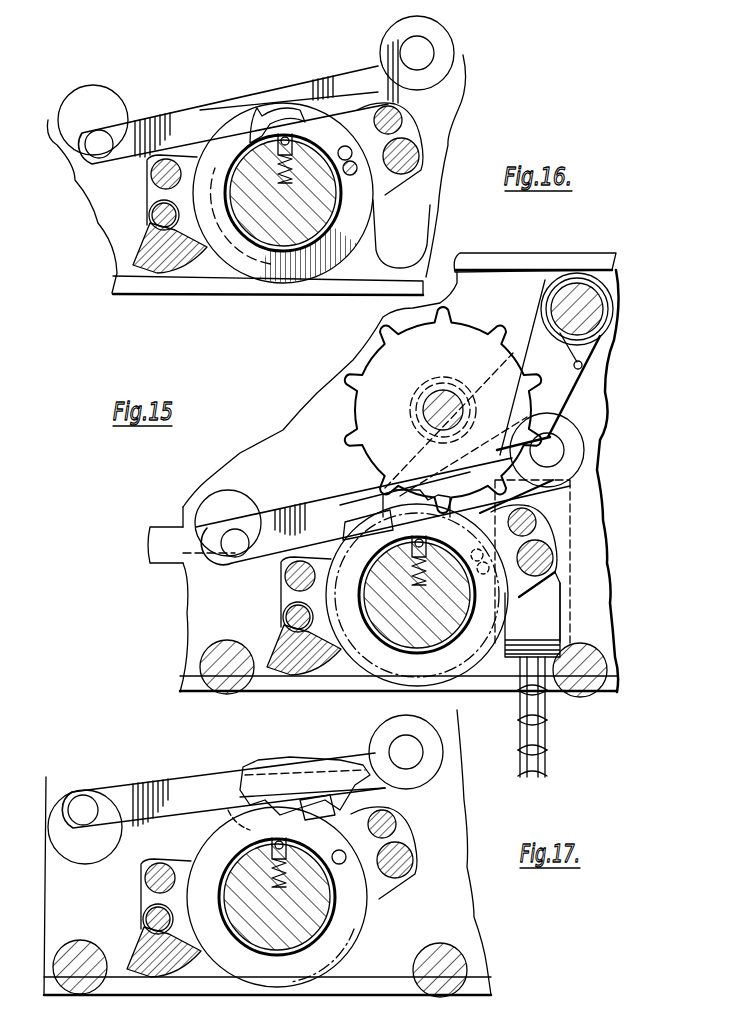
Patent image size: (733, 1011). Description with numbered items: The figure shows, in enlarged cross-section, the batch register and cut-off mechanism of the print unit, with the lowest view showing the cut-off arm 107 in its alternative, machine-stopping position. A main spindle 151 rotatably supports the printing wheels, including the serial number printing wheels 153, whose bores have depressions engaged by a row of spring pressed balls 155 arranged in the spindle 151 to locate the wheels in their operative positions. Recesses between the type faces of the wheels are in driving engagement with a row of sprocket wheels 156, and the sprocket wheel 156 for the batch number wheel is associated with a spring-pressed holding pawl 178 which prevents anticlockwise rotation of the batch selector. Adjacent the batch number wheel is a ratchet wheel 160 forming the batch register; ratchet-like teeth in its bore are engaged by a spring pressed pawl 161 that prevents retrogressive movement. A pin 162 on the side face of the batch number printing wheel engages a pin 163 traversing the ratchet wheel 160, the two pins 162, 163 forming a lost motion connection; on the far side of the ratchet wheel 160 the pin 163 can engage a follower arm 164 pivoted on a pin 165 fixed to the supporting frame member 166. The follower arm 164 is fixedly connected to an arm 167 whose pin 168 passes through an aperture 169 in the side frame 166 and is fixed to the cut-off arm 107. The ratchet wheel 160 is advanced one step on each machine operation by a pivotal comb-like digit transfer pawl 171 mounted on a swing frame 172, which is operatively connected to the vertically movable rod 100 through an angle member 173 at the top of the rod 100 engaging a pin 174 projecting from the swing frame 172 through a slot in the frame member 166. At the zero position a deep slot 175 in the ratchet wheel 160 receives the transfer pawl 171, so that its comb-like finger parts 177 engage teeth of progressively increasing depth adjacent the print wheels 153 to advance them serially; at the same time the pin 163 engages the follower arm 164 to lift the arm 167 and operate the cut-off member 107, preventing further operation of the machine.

In FIG. 15, the rod 100 is at (547, 763).
In FIG. 15, the cut-off arm 107 is at (163, 527).
In FIG. 16, the main spindle 151 is at (260, 223).
In FIG. 15, the serial number printing wheels 153 is at (487, 645).
In FIG. 17, the serial number printing wheels 153 is at (348, 942).
In FIG. 15, the spring pressed balls 155 is at (373, 507).
In FIG. 17, the spring pressed balls 155 is at (320, 810).
In FIG. 15, the sprocket wheels 156 is at (470, 333).
In FIG. 17, the sprocket wheels 156 is at (270, 764).
In FIG. 16, the ratchet wheel 160 is at (327, 127).
In FIG. 17, the ratchet wheel 160 is at (296, 897).
In FIG. 16, the spring pressed pawl 161 is at (280, 134).
In FIG. 16, the pin 162 is at (360, 128).
In FIG. 15, the pin 162 is at (537, 592).
In FIG. 17, the pin 162 is at (418, 883).
In FIG. 16, the pin 163 is at (375, 120).
In FIG. 15, the pin 163 is at (469, 547).
In FIG. 17, the pin 163 is at (240, 805).
In FIG. 16, the follower arm 164 is at (313, 100).
In FIG. 15, the follower arm 164 is at (522, 490).
In FIG. 17, the follower arm 164 is at (373, 795).
In FIG. 16, the pin 165 is at (420, 53).
In FIG. 15, the pin 165 is at (550, 450).
In FIG. 17, the pin 165 is at (413, 753).
In FIG. 16, the supporting frame member 166 is at (102, 203).
In FIG. 15, the supporting frame member 166 is at (283, 430).
In FIG. 17, the supporting frame member 166 is at (447, 849).
In FIG. 16, the arm 167 is at (170, 112).
In FIG. 15, the arm 167 is at (297, 520).
In FIG. 17, the arm 167 is at (177, 810).
In FIG. 16, the pin 168 is at (100, 153).
In FIG. 15, the pin 168 is at (233, 547).
In FIG. 16, the aperture 169 is at (84, 86).
In FIG. 15, the aperture 169 is at (222, 493).
In FIG. 17, the aperture 169 is at (85, 827).
In FIG. 16, the digit transfer pawl 171 is at (130, 250).
In FIG. 15, the digit transfer pawl 171 is at (287, 643).
In FIG. 17, the digit transfer pawl 171 is at (145, 951).
In FIG. 16, the swing frame 172 is at (395, 182).
In FIG. 15, the swing frame 172 is at (560, 551).
In FIG. 17, the swing frame 172 is at (427, 853).
In FIG. 15, the angle member 173 is at (594, 607).
In FIG. 16, the pin 174 is at (400, 157).
In FIG. 15, the pin 174 is at (573, 558).
In FIG. 17, the pin 174 is at (442, 864).
In FIG. 16, the deep slot 175 is at (233, 142).
In FIG. 17, the deep slot 175 is at (140, 894).
In FIG. 15, the comb-like finger parts 177 is at (282, 594).
In FIG. 17, the comb-like finger parts 177 is at (131, 918).
In FIG. 15, the spring-pressed holding pawl 178 is at (560, 393).